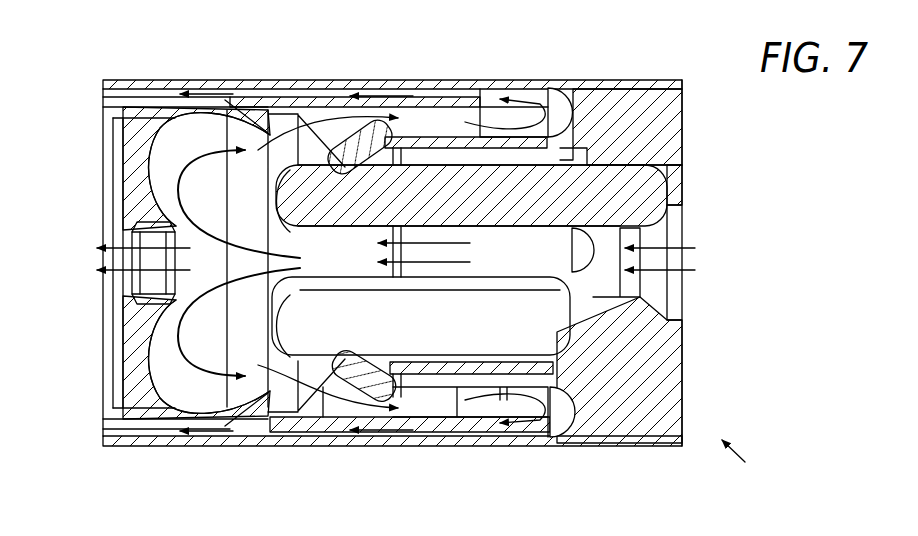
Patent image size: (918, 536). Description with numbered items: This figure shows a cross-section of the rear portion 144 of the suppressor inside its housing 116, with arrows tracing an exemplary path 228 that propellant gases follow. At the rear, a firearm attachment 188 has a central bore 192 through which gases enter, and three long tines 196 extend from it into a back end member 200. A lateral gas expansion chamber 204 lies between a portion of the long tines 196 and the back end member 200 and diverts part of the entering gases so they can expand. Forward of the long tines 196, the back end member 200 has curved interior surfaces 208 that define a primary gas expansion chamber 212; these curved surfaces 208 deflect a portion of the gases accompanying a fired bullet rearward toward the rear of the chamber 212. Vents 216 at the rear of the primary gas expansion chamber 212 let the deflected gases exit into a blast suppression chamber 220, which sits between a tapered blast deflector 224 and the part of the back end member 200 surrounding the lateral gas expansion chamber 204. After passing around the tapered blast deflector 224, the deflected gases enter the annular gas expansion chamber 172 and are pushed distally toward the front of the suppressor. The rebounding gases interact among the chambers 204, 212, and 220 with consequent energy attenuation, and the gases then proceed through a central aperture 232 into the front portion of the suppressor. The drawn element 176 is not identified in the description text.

The housing 116 is at (150, 86).
The rear portion 144 is at (757, 459).
The annular gas expansion chamber 172 is at (125, 97).
The end plate 176 is at (232, 100).
The firearm attachment 188 is at (650, 150).
The central bore 192 is at (683, 292).
The long tines 196 is at (470, 192).
The back end member 200 is at (147, 143).
The lateral gas expansion chamber 204 is at (563, 153).
The curved interior surfaces 208 is at (138, 214).
The primary gas expansion chamber 212 is at (145, 158).
The vents 216 is at (335, 135).
The blast suppression chamber 220 is at (437, 118).
The tapered blast deflector 224 is at (503, 128).
The path 228 is at (215, 93).
The central aperture 232 is at (132, 290).